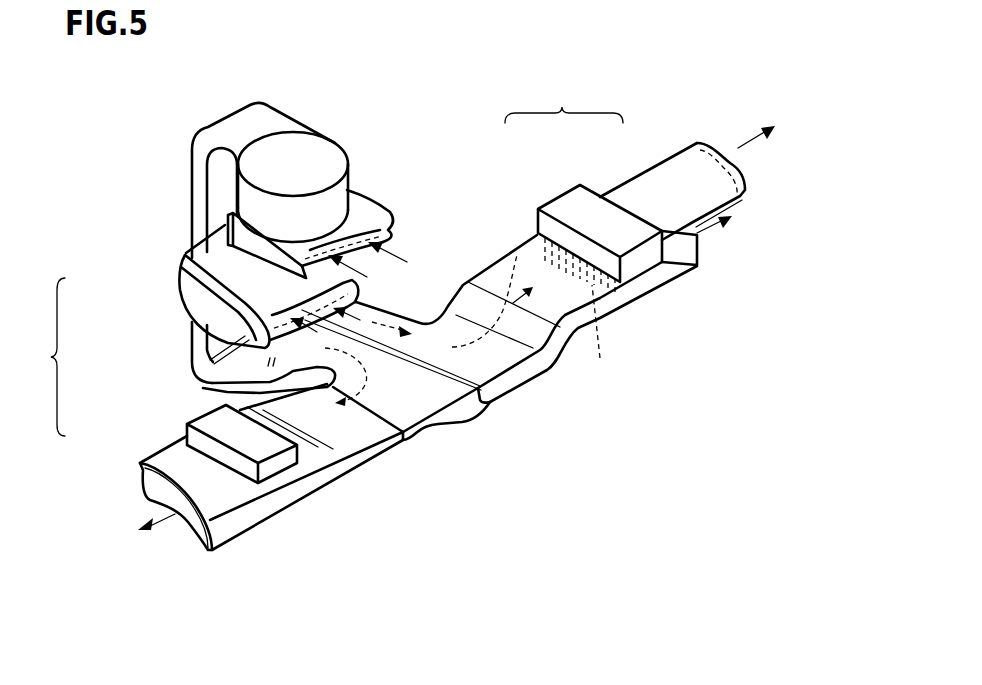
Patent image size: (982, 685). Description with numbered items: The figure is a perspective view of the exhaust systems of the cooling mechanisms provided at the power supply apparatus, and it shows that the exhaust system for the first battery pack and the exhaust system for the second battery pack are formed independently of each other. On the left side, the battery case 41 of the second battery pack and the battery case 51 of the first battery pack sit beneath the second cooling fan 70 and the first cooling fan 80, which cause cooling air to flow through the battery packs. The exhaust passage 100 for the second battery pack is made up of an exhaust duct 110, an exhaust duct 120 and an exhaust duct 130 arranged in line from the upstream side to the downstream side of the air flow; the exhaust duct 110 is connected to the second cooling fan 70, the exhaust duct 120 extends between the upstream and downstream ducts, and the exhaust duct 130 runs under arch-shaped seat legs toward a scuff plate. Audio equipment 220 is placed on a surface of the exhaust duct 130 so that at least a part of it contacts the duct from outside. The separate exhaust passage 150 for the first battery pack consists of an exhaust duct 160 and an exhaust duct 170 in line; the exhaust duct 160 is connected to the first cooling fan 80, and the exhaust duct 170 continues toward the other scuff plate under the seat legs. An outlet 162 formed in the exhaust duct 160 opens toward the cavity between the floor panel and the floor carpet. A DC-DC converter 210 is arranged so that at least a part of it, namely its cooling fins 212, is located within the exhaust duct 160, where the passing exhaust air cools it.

The battery case 41 is at (362, 213).
The battery case 51 is at (230, 258).
The second cooling fan 70 is at (308, 157).
The first cooling fan 80 is at (208, 310).
The exhaust passage 100 is at (39, 357).
The exhaust duct 110 is at (197, 175).
The exhaust duct 120 is at (203, 388).
The exhaust duct 130 is at (175, 455).
The exhaust passage 150 is at (564, 102).
The exhaust duct 160 is at (517, 260).
The outlet 162 is at (697, 235).
The exhaust duct 170 is at (637, 190).
The DC-DC converter 210 is at (617, 232).
The cooling fins 212 is at (604, 334).
The audio equipment 220 is at (262, 445).